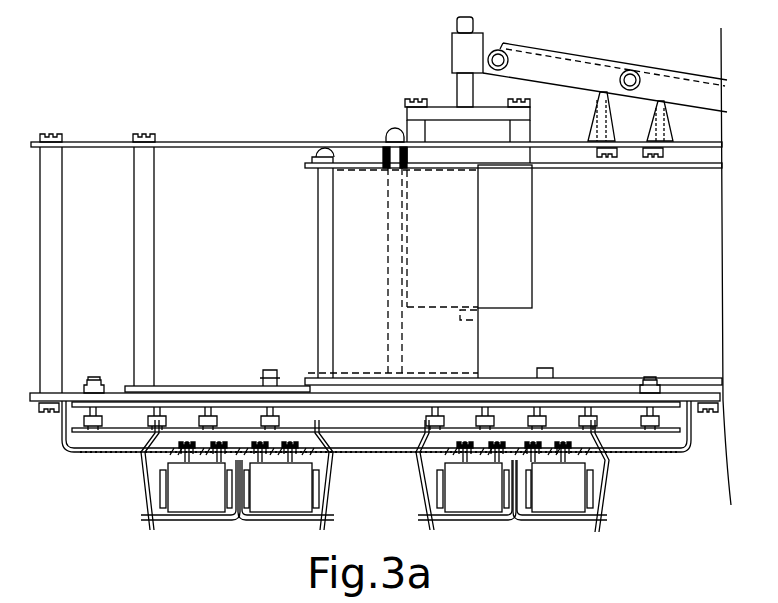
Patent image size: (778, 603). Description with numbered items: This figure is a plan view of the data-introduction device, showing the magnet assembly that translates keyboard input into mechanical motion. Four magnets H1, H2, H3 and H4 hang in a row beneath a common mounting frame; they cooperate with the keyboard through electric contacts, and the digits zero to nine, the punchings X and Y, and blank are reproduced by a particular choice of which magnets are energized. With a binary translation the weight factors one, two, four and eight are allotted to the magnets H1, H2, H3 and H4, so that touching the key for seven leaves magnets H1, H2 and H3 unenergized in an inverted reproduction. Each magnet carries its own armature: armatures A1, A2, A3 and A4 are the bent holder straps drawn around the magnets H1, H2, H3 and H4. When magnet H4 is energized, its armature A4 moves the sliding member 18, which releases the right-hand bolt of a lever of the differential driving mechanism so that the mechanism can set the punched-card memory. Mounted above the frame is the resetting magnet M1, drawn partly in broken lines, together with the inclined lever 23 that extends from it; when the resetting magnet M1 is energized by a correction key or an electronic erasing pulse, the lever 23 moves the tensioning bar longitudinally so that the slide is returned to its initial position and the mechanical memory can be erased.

The lever 23 is at (668, 80).
The resetting magnet M1 is at (420, 271).
The sliding member 18 is at (347, 402).
The magnet H1 is at (473, 487).
The magnet H2 is at (559, 487).
The magnet H3 is at (196, 487).
The magnet H4 is at (281, 487).
The armature A1 is at (428, 492).
The armature A2 is at (603, 492).
The armature A3 is at (150, 493).
The armature A4 is at (321, 500).